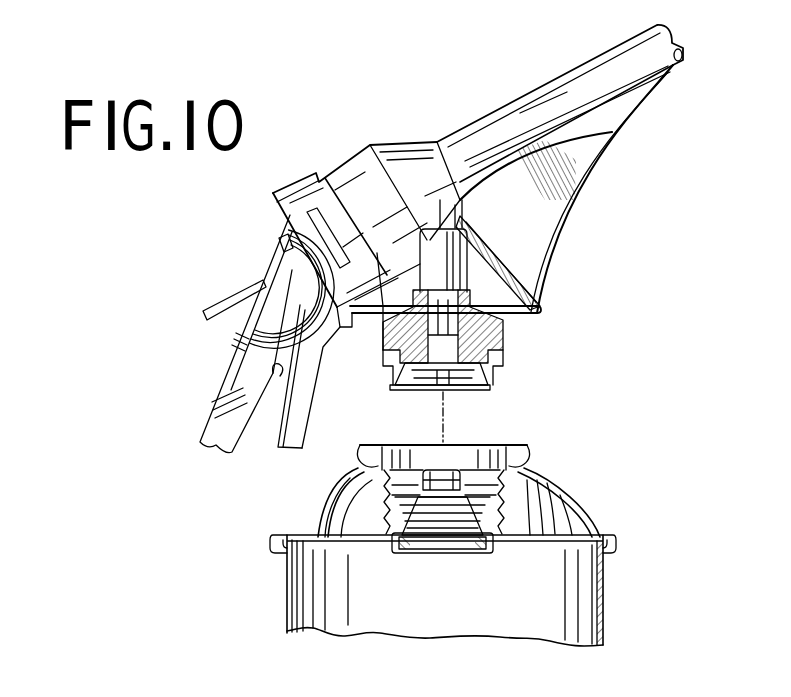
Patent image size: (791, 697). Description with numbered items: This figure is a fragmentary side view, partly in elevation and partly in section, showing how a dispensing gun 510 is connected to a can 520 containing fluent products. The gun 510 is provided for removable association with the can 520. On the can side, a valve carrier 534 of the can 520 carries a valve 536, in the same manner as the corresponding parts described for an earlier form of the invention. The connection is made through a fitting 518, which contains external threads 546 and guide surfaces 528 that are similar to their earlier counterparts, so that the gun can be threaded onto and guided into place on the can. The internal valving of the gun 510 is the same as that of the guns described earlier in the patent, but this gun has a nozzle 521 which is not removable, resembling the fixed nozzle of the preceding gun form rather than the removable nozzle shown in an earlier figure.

The gun 510 is at (545, 66).
The nozzle 521 is at (636, 57).
The fitting 518 is at (516, 344).
The external threads 546 is at (492, 373).
The guide surfaces 528 is at (385, 337).
The can 520 is at (589, 511).
The valve carrier 534 is at (469, 466).
The valve 536 is at (417, 563).